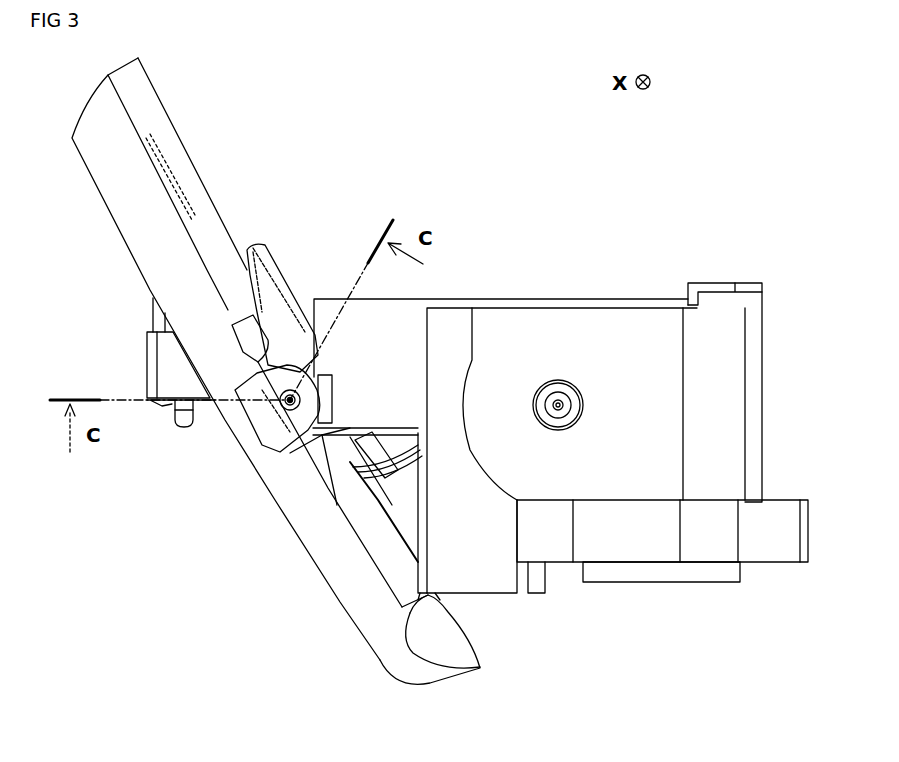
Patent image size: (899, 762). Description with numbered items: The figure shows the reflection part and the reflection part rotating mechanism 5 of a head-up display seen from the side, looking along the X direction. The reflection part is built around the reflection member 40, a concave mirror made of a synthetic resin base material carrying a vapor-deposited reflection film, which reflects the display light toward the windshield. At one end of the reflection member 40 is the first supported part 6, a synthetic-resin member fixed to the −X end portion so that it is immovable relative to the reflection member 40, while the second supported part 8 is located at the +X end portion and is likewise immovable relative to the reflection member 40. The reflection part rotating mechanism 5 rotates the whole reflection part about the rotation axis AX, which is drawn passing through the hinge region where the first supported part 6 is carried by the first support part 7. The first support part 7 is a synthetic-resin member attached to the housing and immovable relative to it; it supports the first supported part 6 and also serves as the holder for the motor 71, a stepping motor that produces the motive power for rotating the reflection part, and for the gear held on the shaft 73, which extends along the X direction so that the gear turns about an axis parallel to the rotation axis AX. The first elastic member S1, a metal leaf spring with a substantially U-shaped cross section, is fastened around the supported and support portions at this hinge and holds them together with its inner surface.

The reflection part rotating mechanism 5 is at (633, 232).
The first supported part 6 is at (265, 277).
The first support part 7 is at (607, 332).
The second supported part 8 is at (163, 362).
The reflection member 40 is at (158, 117).
The motor 71 is at (664, 572).
The shaft 73 is at (555, 395).
The rotation axis AX is at (288, 403).
The first elastic member S1 is at (290, 432).